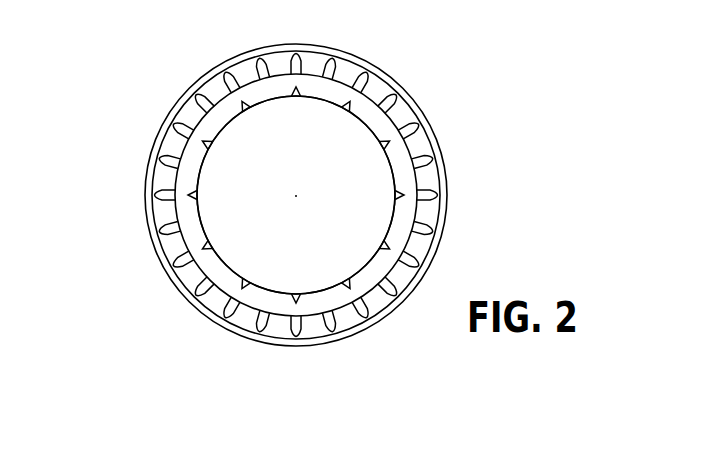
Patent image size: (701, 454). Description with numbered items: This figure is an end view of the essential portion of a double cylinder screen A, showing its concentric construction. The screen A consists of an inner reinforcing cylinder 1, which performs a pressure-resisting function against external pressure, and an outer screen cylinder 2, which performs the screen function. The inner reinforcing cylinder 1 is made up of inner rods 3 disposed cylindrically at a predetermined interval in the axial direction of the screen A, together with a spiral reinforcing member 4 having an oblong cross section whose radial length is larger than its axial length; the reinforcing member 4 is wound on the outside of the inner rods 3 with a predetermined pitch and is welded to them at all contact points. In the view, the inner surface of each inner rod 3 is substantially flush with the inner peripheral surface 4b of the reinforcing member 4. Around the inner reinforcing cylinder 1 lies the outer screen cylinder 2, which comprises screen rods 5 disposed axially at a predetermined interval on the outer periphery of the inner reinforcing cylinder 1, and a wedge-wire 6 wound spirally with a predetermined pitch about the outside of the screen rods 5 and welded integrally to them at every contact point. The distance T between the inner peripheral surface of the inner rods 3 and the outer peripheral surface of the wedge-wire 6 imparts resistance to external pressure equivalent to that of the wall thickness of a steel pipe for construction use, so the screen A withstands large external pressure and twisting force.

The double cylinder screen A is at (460, 40).
The inner reinforcing cylinder 1 is at (369, 131).
The outer screen cylinder 2 is at (462, 158).
The inner rods 3 is at (385, 146).
The spiral reinforcing member 4 is at (400, 222).
The inner peripheral surface of the reinforcing member 4b is at (229, 133).
The screen rods 5 is at (418, 125).
The wedge-wire 6 is at (445, 220).
The distance between inner peripheral surface of inner rods and outer peripheral sur T is at (193, 214).